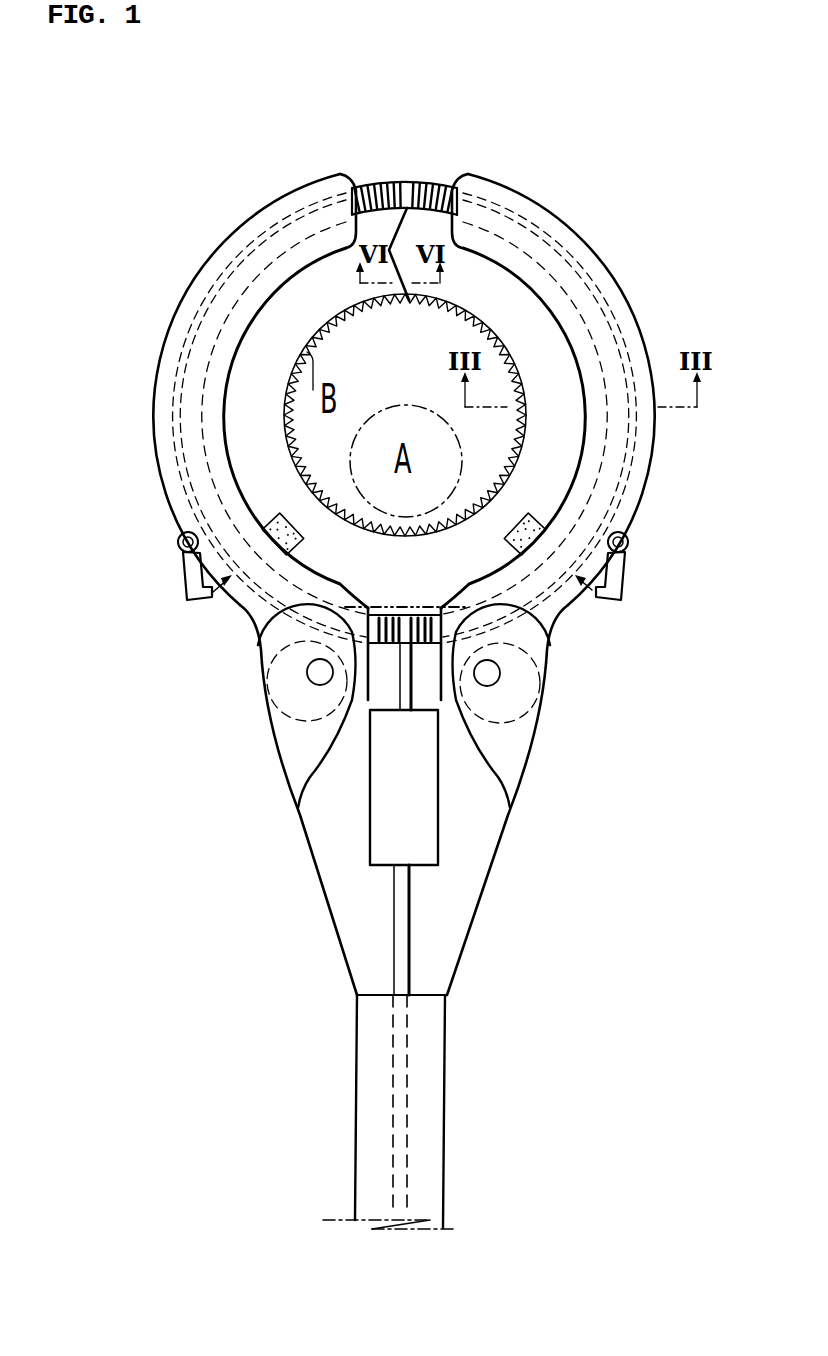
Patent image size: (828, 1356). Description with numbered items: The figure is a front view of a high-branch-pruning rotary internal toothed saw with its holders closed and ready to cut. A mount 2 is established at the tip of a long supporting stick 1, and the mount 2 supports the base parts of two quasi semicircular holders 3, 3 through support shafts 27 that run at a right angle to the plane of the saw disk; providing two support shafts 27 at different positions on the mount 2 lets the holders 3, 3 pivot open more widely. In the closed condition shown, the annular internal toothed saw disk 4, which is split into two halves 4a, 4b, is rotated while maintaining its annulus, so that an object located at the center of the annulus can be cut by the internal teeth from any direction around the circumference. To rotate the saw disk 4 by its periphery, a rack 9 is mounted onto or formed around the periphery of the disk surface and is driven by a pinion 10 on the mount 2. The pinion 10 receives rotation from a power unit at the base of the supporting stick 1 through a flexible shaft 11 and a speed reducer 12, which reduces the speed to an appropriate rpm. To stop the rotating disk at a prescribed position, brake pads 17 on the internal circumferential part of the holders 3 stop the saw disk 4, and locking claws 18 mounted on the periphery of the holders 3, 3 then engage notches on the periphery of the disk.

The supporting stick 1 is at (370, 1137).
The mount 2 is at (340, 847).
The quasi semicircular holder 3 is at (160, 441).
The annular internal toothed saw disk 4 is at (431, 136).
The internal toothed saw disk half 4a is at (378, 226).
The internal toothed saw disk half 4b is at (433, 226).
The rack 9 is at (358, 193).
The pinion 10 is at (365, 633).
The flexible shaft 11 is at (402, 958).
The speed reducer 12 is at (415, 800).
The brake pad 17 is at (272, 545).
The locking claw 18 is at (190, 578).
The support shaft 27 is at (310, 670).